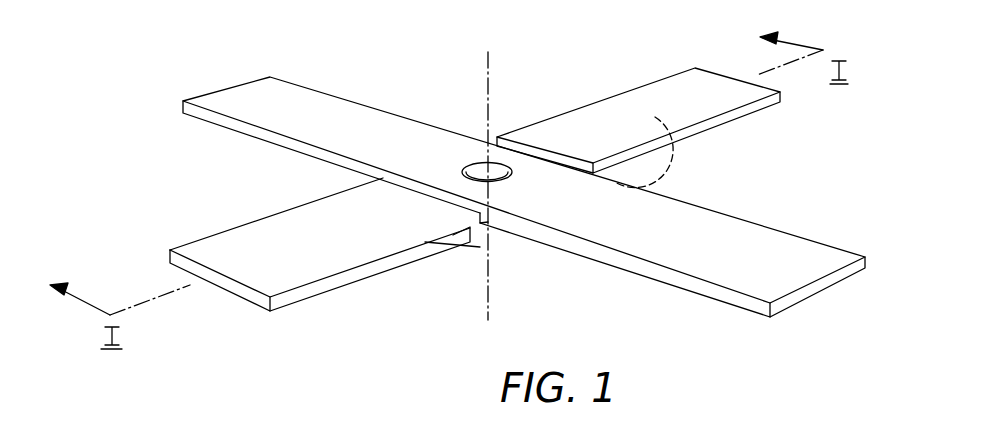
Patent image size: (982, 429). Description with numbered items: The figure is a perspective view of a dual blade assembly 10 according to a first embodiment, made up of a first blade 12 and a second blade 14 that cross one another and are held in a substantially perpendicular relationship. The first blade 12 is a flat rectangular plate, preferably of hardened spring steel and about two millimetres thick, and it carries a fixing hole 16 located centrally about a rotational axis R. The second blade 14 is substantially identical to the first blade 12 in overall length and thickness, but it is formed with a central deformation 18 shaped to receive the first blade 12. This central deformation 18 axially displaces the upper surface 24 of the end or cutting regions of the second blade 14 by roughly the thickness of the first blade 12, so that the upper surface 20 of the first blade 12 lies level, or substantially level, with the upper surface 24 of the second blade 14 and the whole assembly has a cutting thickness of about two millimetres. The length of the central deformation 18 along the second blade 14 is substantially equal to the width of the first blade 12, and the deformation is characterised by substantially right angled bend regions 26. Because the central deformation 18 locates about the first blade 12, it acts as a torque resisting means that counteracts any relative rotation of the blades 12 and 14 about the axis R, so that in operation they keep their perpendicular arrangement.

The dual blade assembly 10 is at (143, 109).
The first blade 12 is at (686, 224).
The second blade 14 is at (325, 278).
The fixing hole 16 is at (473, 163).
The central deformation 18 is at (490, 222).
The upper surface of the first blade 20 is at (752, 265).
The upper surface of the second blade 24 is at (309, 258).
The right angled bend regions 26 is at (577, 158).
The rotational axis R is at (488, 78).